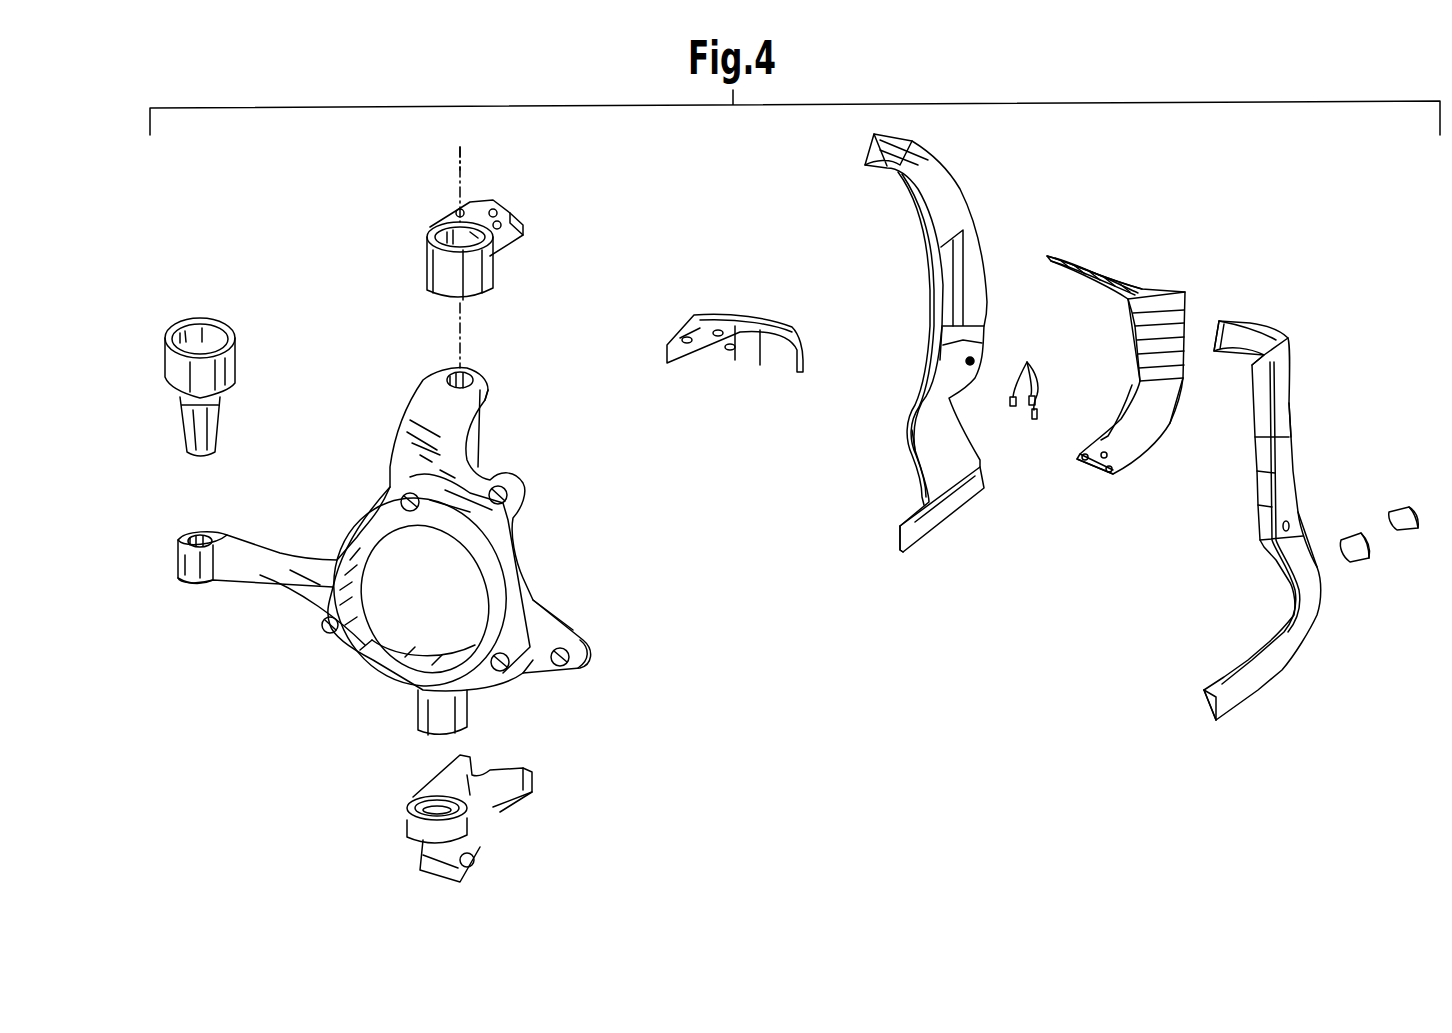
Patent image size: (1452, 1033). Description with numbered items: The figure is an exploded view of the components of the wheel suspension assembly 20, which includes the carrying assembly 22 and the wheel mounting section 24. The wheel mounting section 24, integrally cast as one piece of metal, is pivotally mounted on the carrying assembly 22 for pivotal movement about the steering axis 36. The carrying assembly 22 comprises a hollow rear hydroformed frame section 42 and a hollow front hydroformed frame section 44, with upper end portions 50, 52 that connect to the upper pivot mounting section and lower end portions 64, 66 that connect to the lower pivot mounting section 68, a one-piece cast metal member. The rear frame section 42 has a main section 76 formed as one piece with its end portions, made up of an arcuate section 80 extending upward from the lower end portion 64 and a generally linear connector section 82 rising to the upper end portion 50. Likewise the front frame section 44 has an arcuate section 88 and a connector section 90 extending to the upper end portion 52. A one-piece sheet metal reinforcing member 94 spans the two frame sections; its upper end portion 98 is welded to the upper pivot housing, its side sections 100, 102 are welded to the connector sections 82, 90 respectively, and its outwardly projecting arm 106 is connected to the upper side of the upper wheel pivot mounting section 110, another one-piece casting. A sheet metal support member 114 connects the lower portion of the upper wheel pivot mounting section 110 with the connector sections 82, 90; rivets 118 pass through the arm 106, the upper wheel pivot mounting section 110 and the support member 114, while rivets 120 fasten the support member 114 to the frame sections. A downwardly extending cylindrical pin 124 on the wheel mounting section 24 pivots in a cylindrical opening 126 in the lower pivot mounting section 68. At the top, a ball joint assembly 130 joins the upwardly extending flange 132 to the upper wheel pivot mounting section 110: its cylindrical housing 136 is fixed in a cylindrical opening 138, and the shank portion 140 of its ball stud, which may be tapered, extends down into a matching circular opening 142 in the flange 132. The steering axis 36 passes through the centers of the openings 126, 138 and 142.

The wheel suspension assembly 20 is at (328, 165).
The carrying assembly 22 is at (838, 218).
The wheel mounting section 24 is at (548, 590).
The steering axis 36 is at (462, 165).
The rear hydroformed frame section 42 is at (932, 262).
The front hydroformed frame section 44 is at (1296, 446).
The upper end portion of rear frame section 50 is at (908, 150).
The upper end portion of front frame section 52 is at (1250, 326).
The lower end portion of rear frame section 64 is at (905, 530).
The lower end portion of front frame section 66 is at (1236, 697).
The lower pivot mounting section 68 is at (542, 775).
The main section of rear frame section 76 is at (932, 357).
The arcuate section of rear frame section 80 is at (915, 455).
The connector section of rear frame section 82 is at (950, 297).
The arcuate section of front frame section 88 is at (1255, 520).
The connector section of front frame section 90 is at (1284, 401).
The reinforcing member 94 is at (1152, 275).
The upper end portion of reinforcing member 98 is at (1083, 255).
The side section of reinforcing member 100 is at (1140, 340).
The side section of reinforcing member 102 is at (1165, 368).
The arm of reinforcing member 106 is at (1097, 472).
The upper wheel pivot mounting section 110 is at (438, 215).
The support member 114 is at (688, 318).
The rivets 118 is at (1036, 376).
The rivets 120 is at (1395, 523).
The cylindrical pin 124 is at (430, 719).
The cylindrical opening 126 is at (425, 803).
The ball joint assembly 130 is at (195, 316).
The flange 132 is at (475, 396).
The cylindrical housing 136 is at (220, 373).
The cylindrical opening 138 is at (472, 234).
The shank portion 140 is at (200, 428).
The circular opening 142 is at (480, 380).